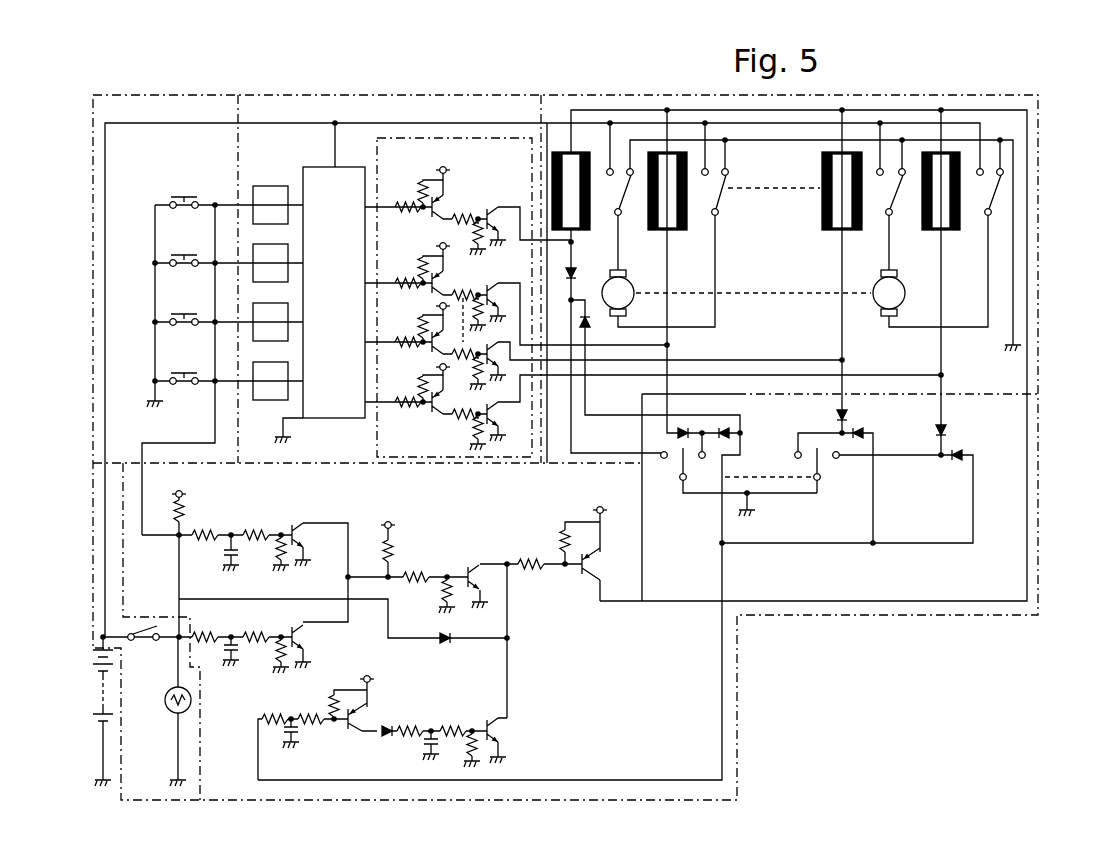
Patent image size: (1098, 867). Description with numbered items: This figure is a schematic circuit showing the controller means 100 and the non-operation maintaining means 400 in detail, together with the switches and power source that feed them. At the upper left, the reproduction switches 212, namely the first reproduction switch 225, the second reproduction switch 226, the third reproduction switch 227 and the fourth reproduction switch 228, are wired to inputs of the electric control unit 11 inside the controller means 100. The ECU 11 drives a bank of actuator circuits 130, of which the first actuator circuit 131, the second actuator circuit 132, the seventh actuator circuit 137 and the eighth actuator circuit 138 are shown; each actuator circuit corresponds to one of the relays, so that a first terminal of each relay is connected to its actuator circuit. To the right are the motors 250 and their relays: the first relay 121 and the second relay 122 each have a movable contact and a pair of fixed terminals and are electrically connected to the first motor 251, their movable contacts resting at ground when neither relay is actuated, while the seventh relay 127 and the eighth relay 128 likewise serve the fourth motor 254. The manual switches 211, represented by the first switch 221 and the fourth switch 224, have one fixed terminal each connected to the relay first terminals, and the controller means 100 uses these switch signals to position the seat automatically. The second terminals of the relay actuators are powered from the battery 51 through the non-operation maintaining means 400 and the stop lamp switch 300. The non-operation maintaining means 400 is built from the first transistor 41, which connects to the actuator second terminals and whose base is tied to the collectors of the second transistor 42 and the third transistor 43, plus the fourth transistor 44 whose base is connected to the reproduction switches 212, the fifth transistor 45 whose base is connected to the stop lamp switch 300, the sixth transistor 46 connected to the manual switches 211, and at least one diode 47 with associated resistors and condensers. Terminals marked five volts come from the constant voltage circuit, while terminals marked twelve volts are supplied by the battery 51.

The reproduction switches 212 is at (185, 140).
The first reproduction switch 225 is at (185, 196).
The third reproduction switch 227 is at (200, 247).
The fourth reproduction switch 228 is at (196, 306).
The second reproduction switch 226 is at (196, 364).
The controller means 100 is at (537, 96).
The electric control unit 11 is at (321, 420).
The actuator circuits 130 is at (403, 130).
The first actuator circuit 131 is at (418, 222).
The second actuator circuit 132 is at (420, 290).
The seventh actuator circuit 137 is at (420, 350).
The eighth actuator circuit 138 is at (418, 412).
The motors 250 is at (1036, 394).
The first relay 121 is at (604, 205).
The second relay 122 is at (700, 215).
The seventh relay 127 is at (870, 212).
The eighth relay 128 is at (972, 220).
The first motor 251 is at (650, 292).
The fourth motor 254 is at (880, 318).
The manual switches 211 is at (882, 612).
The first switch 221 is at (672, 470).
The fourth switch 224 is at (833, 470).
The non-operation maintaining means 400 is at (575, 800).
The first transistor 41 is at (585, 582).
The second transistor 42 is at (470, 592).
The third transistor 43 is at (487, 718).
The fourth transistor 44 is at (306, 522).
The fifth transistor 45 is at (207, 665).
The sixth transistor 46 is at (350, 735).
The diode 47 is at (445, 645).
The battery 51 is at (93, 700).
The stop lamp switch 300 is at (152, 785).